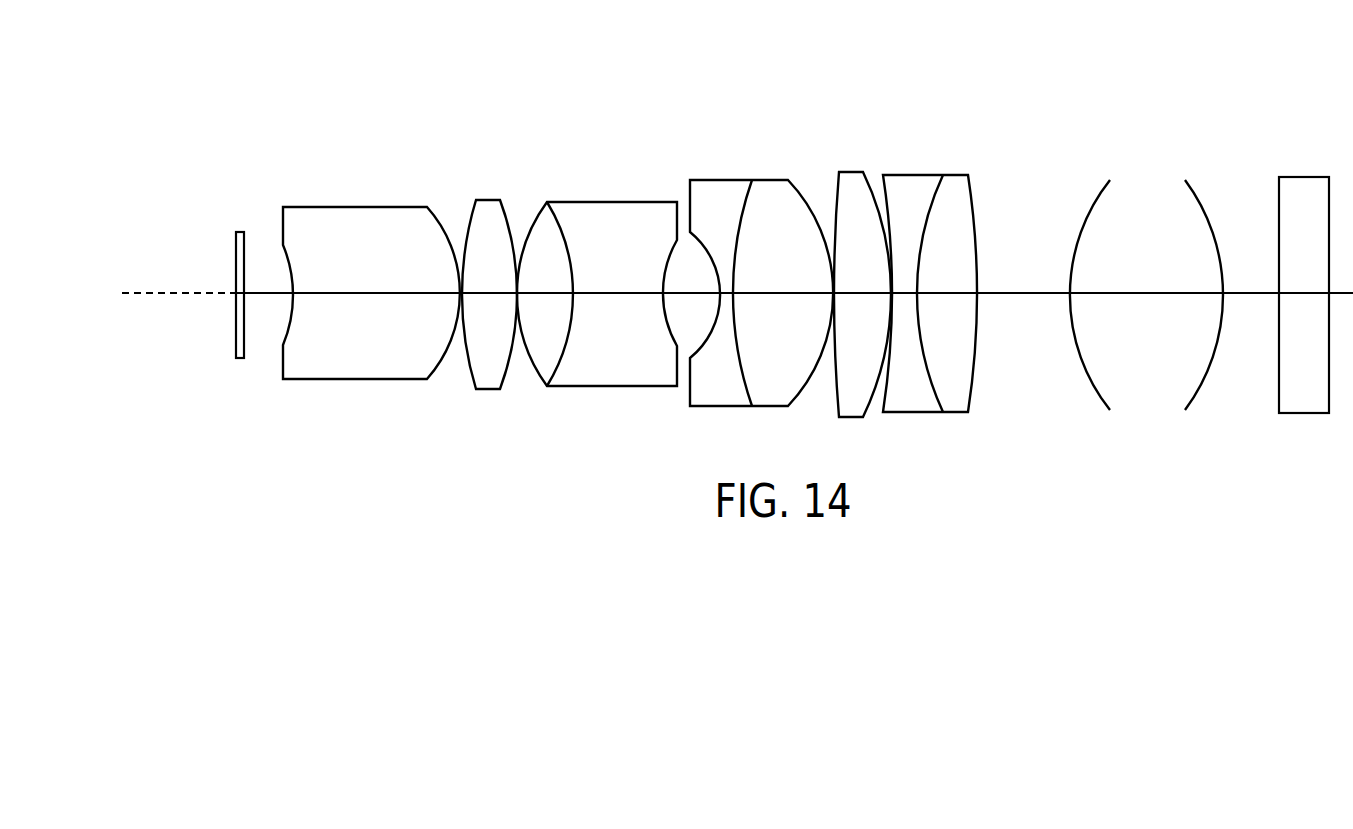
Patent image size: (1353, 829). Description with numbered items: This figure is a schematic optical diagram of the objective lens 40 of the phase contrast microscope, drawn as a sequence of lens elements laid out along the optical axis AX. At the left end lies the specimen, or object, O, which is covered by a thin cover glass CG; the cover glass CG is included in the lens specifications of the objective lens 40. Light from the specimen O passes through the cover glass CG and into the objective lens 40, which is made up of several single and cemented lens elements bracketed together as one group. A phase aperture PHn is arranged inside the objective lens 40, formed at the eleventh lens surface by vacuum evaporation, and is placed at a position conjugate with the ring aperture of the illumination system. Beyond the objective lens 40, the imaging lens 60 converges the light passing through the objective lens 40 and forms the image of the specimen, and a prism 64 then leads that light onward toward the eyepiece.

The objective lens 40 is at (977, 107).
The imaging lens 60 is at (1066, 107).
The prism 64 is at (1312, 177).
The optical axis AX is at (137, 295).
The specimen (object) O is at (236, 302).
The cover glass CG is at (239, 359).
The phase aperture PHn is at (752, 200).